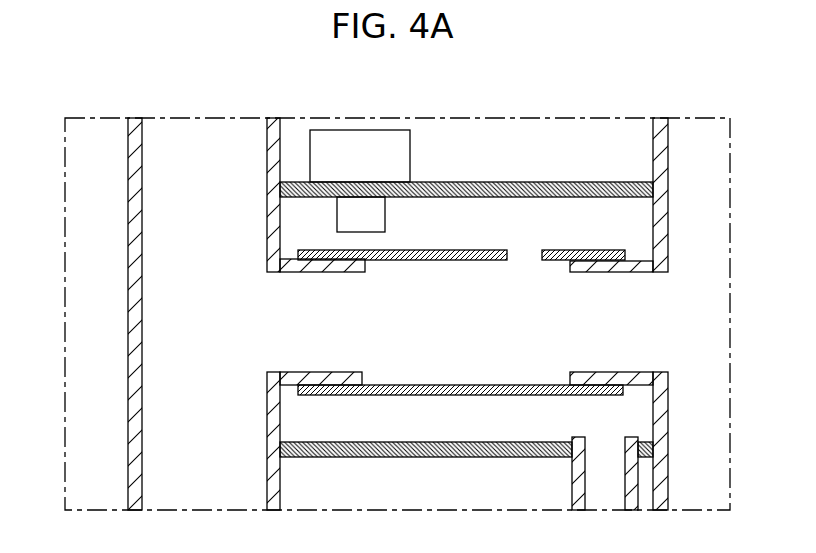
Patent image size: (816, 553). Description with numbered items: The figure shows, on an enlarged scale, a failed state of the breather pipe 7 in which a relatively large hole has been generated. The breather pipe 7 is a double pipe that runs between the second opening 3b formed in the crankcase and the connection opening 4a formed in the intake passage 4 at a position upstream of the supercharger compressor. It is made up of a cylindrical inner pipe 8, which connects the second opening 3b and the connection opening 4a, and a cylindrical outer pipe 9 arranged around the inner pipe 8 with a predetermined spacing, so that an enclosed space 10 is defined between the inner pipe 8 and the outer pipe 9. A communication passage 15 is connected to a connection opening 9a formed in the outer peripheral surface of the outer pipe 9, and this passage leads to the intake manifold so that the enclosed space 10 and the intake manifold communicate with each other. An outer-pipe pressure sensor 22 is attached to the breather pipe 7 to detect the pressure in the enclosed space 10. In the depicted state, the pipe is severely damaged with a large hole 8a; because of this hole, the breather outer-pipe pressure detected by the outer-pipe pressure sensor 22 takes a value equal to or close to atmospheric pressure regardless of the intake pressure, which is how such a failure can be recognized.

The intake passage 4 is at (118, 409).
The connection opening 4a is at (282, 258).
The second opening 3b is at (628, 258).
The outer-pipe pressure sensor 22 is at (360, 130).
The breather pipe 7 is at (597, 174).
The inner pipe 8 is at (461, 324).
The hole 8a is at (544, 258).
The outer pipe 9 is at (442, 181).
The connection opening 9a is at (602, 448).
The enclosed space 10 is at (462, 226).
The communication passage 15 is at (572, 477).